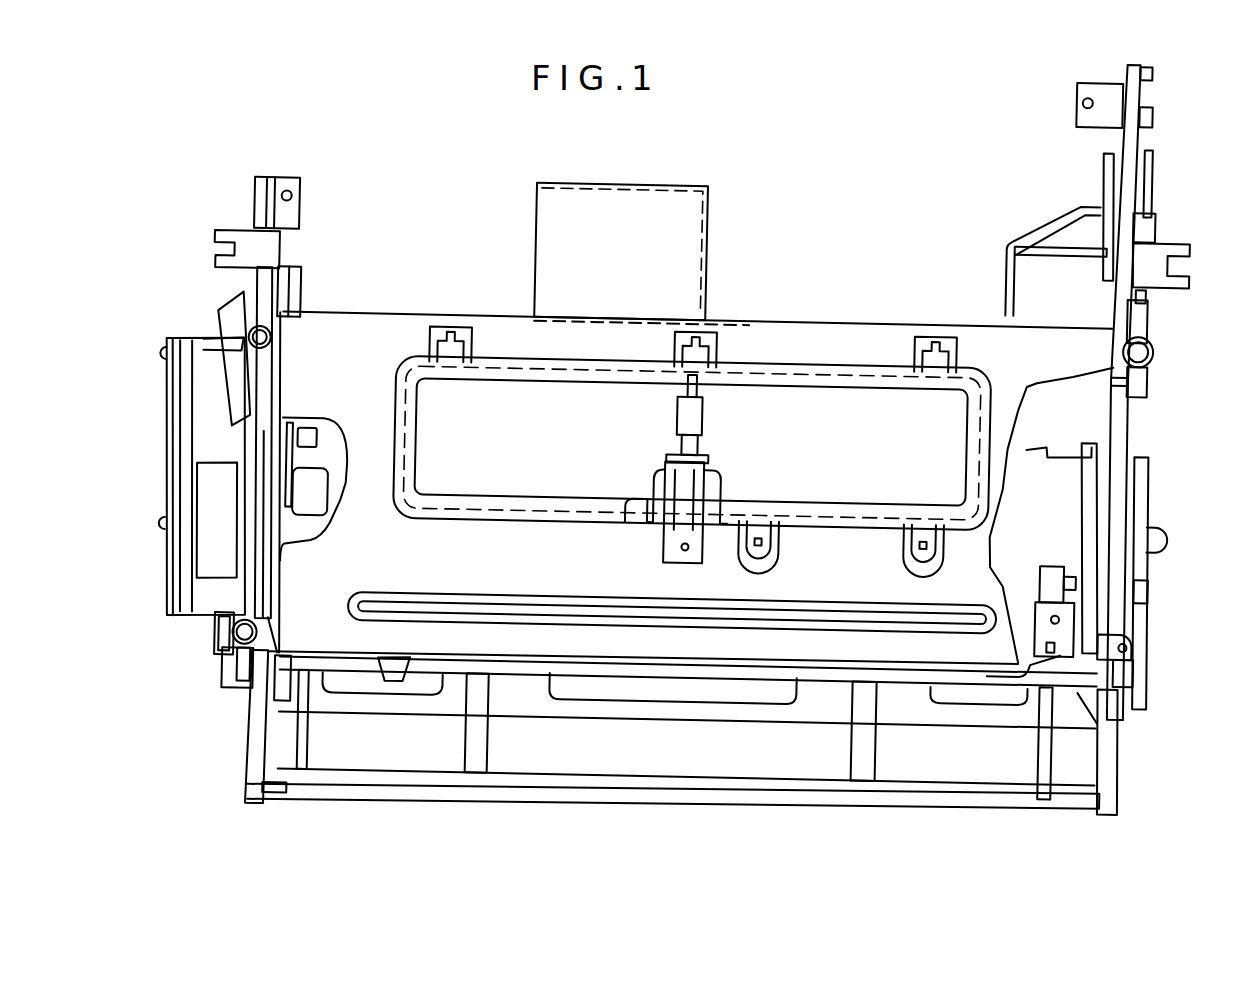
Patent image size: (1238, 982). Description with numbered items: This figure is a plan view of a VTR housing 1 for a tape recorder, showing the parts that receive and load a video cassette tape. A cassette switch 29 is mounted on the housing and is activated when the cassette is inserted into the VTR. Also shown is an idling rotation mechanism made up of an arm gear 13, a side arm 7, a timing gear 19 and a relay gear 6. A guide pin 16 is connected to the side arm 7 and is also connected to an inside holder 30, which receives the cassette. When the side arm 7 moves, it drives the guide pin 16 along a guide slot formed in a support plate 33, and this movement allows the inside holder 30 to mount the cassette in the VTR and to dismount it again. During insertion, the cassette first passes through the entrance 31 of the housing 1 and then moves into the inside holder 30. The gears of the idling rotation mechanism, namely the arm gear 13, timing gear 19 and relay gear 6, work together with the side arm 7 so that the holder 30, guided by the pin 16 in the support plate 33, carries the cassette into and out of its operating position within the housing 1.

The VTR housing 1 is at (255, 762).
The relay gear 6 is at (243, 672).
The side arm 7 is at (247, 607).
The arm gear 13 is at (201, 570).
The guide pin 16 is at (289, 428).
The timing gear 19 is at (192, 460).
The cassette switch 29 is at (686, 500).
The inside holder 30 is at (316, 467).
The entrance 31 is at (711, 803).
The support plate 33 is at (255, 422).